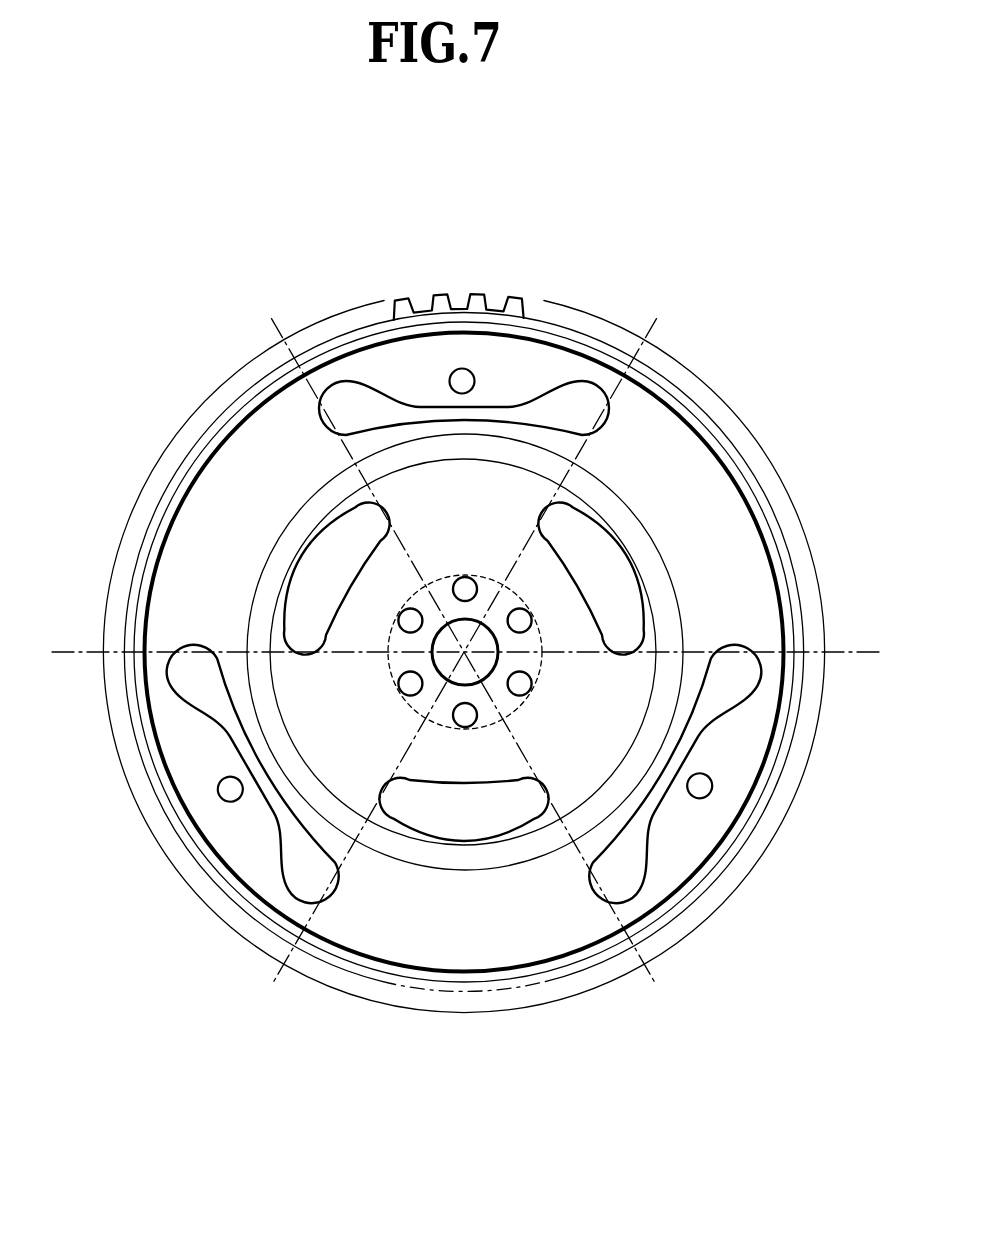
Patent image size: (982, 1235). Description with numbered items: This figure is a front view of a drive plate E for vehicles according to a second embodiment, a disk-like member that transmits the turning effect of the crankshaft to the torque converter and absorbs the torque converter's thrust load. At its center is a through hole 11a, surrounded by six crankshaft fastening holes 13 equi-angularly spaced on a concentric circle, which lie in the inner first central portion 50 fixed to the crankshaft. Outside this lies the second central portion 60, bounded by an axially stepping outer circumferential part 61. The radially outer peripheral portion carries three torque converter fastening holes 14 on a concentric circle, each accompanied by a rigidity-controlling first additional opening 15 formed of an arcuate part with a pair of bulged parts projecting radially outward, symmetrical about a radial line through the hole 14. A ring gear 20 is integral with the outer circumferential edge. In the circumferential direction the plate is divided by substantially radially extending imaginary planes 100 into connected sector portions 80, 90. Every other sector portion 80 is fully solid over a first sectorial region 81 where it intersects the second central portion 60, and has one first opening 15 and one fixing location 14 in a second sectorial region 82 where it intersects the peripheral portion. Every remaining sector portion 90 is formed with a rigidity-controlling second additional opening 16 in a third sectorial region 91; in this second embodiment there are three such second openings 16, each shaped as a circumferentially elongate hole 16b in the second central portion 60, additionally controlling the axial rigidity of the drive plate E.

The drive plate E is at (227, 298).
The through hole 11a is at (488, 676).
The crankshaft fastening holes 13 is at (519, 607).
The torque converter fastening holes 14 is at (475, 380).
The rigidity-controlling first additional openings 15 is at (603, 390).
The rigidity-controlling second additional openings 16 is at (600, 522).
The circumferentially elongate hole 16b is at (312, 580).
The ring gear 20 is at (477, 298).
The first central portion 50 is at (377, 671).
The second central portion 60 is at (245, 605).
The axially stepping outer circumferential part 61 is at (256, 584).
The connected sector portions 80 is at (350, 308).
The first sectorial region 81 is at (376, 759).
The second sectorial region 82 is at (265, 851).
The connected sector portions 90 is at (155, 467).
The third sectorial region 91 is at (259, 456).
The imaginary planes 100 is at (262, 338).